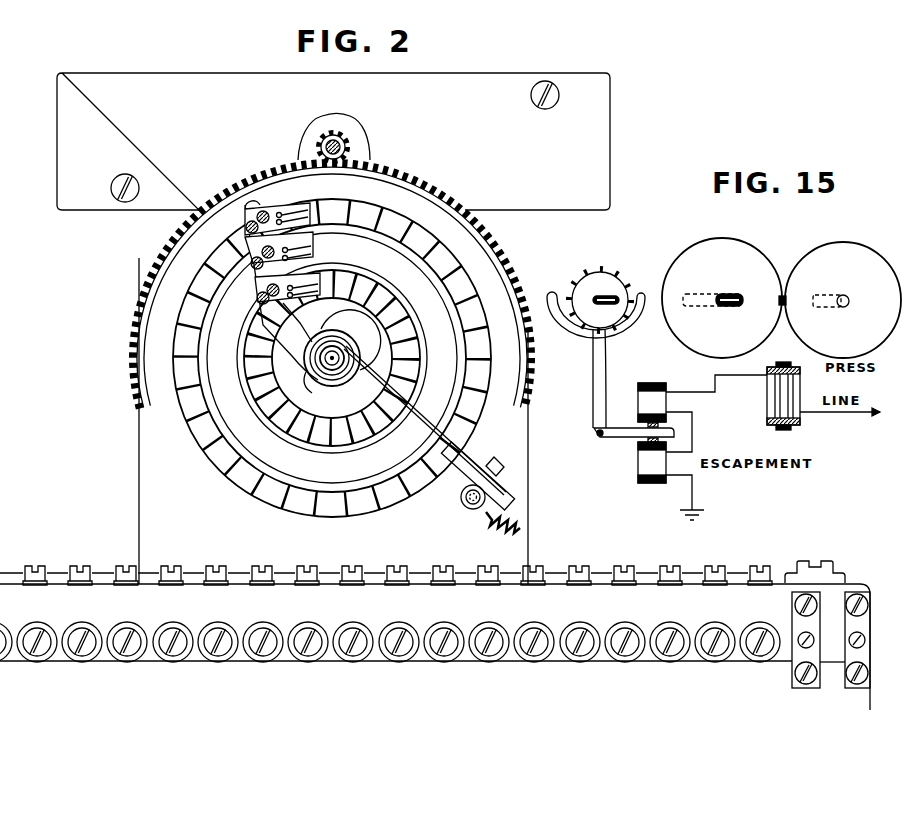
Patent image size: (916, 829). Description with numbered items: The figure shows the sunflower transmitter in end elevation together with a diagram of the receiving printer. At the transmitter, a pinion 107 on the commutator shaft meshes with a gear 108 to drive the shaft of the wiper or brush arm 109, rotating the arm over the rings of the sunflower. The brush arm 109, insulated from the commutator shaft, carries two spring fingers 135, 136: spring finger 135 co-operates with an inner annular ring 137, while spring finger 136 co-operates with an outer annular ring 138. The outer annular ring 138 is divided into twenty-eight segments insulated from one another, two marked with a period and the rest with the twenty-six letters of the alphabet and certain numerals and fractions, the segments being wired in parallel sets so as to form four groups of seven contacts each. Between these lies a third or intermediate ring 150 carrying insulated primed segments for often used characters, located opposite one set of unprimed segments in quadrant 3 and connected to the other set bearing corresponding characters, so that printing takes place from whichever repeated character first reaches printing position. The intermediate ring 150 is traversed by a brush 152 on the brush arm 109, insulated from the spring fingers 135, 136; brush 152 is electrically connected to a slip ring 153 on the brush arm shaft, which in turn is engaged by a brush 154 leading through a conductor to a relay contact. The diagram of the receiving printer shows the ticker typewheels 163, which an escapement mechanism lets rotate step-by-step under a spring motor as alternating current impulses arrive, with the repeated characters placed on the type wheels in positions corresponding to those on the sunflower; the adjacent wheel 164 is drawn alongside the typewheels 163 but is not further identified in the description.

In FIG. 2, the quadrant 3 is at (330, 185).
In FIG. 2, the pinion 107 is at (350, 142).
In FIG. 2, the gear 108 is at (140, 283).
In FIG. 2, the brush arm 109 is at (281, 292).
In FIG. 2, the spring finger 135 is at (308, 296).
In FIG. 2, the spring finger 136 is at (286, 212).
In FIG. 2, the inner annular ring 137 is at (381, 311).
In FIG. 2, the outer annular ring 138 is at (180, 346).
In FIG. 2, the intermediate ring 150 is at (228, 418).
In FIG. 2, the brush 152 is at (313, 250).
In FIG. 2, the slip ring 153 is at (318, 380).
In FIG. 2, the brush 154 is at (368, 372).
In FIG. 15, the ticker typewheels 163 is at (622, 335).
In FIG. 15, the type wheel 164 is at (760, 262).